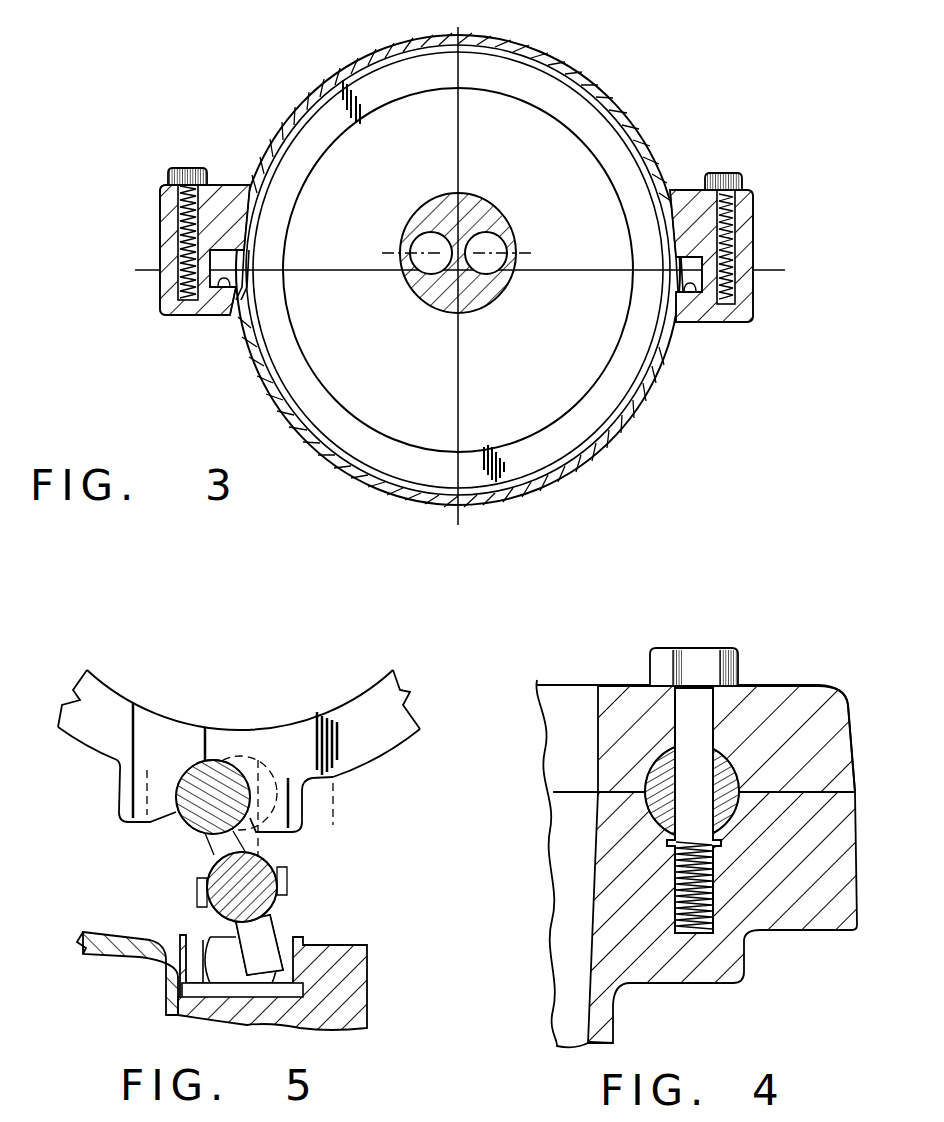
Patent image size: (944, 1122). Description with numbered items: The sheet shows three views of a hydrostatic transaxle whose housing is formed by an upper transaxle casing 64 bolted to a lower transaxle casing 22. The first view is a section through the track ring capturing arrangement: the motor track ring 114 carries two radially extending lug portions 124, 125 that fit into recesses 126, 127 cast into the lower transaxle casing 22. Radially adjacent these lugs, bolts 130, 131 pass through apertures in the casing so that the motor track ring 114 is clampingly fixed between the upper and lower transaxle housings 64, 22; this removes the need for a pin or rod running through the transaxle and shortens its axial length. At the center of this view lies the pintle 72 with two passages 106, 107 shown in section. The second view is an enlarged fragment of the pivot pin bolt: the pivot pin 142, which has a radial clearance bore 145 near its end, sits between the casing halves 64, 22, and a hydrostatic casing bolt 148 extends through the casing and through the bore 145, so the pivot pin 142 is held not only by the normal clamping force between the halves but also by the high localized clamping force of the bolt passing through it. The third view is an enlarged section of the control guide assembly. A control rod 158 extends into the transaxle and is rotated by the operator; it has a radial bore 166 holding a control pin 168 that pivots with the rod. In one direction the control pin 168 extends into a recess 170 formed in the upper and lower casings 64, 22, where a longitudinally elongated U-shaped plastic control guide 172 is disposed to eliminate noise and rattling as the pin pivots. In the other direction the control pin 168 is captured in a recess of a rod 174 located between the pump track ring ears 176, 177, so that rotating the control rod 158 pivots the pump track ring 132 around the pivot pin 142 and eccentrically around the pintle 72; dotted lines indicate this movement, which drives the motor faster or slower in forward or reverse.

In FIG. 3, the lower transaxle casing 22 is at (651, 392).
In FIG. 5, the lower transaxle casing 22 is at (125, 947).
In FIG. 4, the lower transaxle casing 22 is at (790, 930).
In FIG. 3, the upper transaxle casing 64 is at (649, 148).
In FIG. 5, the upper transaxle casing 64 is at (367, 983).
In FIG. 4, the upper transaxle casing 64 is at (843, 720).
In FIG. 3, the pintle 72 is at (478, 303).
In FIG. 3, the passage 106 is at (492, 243).
In FIG. 3, the passage 107 is at (425, 243).
In FIG. 3, the motor track ring 114 is at (560, 447).
In FIG. 3, the lug portion 124 is at (685, 197).
In FIG. 3, the lug portion 125 is at (222, 255).
In FIG. 3, the recess 126 is at (703, 300).
In FIG. 3, the recess 127 is at (227, 289).
In FIG. 3, the bolt 130 is at (753, 217).
In FIG. 3, the bolt 131 is at (160, 217).
In FIG. 5, the pump track ring 132 is at (340, 720).
In FIG. 4, the pivot pin 142 is at (770, 717).
In FIG. 4, the radial clearance bore 145 is at (733, 820).
In FIG. 4, the hydrostatic casing bolt 148 is at (658, 672).
In FIG. 5, the control rod 158 is at (282, 893).
In FIG. 5, the radial bore 166 is at (207, 860).
In FIG. 5, the control pin 168 is at (203, 940).
In FIG. 5, the recess 170 is at (308, 947).
In FIG. 5, the control guide 172 is at (290, 940).
In FIG. 5, the rod 174 is at (180, 823).
In FIG. 5, the pump track ring ear 176 is at (297, 817).
In FIG. 5, the pump track ring ear 177 is at (127, 793).